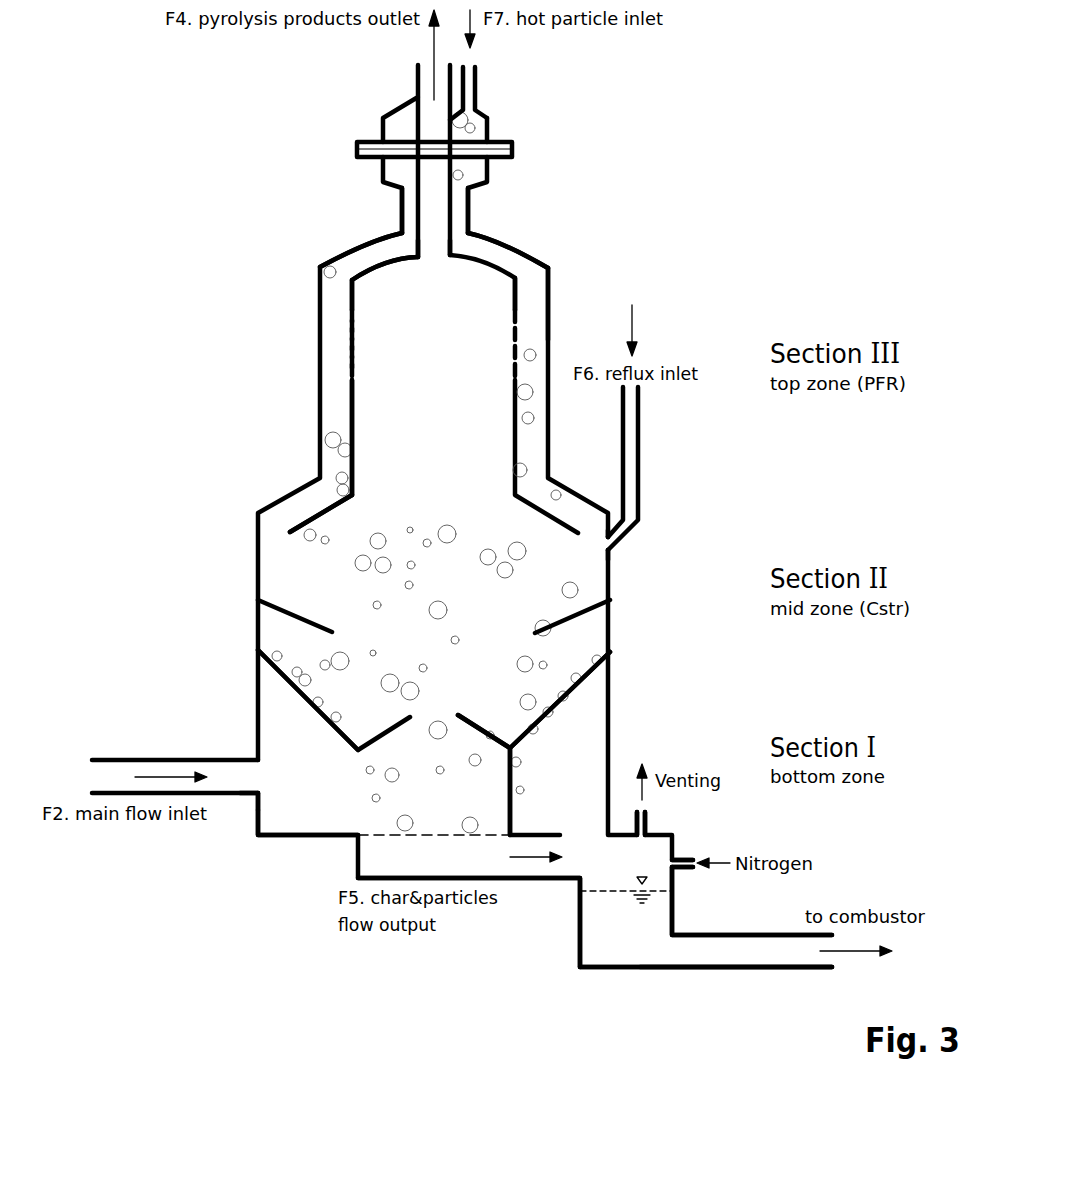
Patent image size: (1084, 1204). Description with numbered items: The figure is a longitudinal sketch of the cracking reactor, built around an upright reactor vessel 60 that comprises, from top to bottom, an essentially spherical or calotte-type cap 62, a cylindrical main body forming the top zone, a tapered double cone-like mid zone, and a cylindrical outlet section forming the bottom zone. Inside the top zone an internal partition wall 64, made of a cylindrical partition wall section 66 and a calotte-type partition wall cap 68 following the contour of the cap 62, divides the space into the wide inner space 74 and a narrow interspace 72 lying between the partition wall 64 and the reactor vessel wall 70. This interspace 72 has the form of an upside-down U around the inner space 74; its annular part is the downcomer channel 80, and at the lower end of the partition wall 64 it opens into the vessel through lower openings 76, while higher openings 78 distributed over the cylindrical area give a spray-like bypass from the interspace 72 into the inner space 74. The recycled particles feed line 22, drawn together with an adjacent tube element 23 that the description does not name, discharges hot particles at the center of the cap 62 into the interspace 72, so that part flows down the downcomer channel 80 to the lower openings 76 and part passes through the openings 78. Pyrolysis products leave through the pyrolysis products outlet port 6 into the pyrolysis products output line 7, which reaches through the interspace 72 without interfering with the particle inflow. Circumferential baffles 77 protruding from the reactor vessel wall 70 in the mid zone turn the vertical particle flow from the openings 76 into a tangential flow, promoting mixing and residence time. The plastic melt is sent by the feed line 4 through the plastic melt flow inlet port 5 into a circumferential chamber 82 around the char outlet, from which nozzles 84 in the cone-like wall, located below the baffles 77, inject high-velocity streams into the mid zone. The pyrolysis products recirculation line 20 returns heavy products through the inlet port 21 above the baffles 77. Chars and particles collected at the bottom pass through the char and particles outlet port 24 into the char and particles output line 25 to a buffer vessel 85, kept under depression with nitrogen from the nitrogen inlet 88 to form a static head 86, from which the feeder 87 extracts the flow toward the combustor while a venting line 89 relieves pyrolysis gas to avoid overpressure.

The feed line 4 is at (128, 760).
The plastic melt flow inlet port 5 is at (255, 795).
The pyrolysis products outlet port 6 is at (415, 250).
The pyrolysis products output line 7 is at (418, 77).
The pyrolysis products recirculation line 20 is at (640, 458).
The inlet port 21 is at (612, 555).
The recycled particles feed line 22 is at (478, 90).
The hot particle outer tube 23 is at (487, 117).
The char and particles outlet port 24 is at (513, 826).
The char and particles output line 25 is at (578, 882).
The reactor vessel 60 is at (300, 665).
The cap 62 is at (528, 270).
The partition wall 64 is at (350, 295).
The partition wall section 66 is at (350, 440).
The partition wall cap 68 is at (367, 266).
The reactor vessel wall 70 is at (330, 262).
The interspace 72 is at (462, 222).
The inner space 74 is at (497, 310).
The lower openings 76 is at (290, 525).
The circumferential baffles 77 is at (282, 604).
The openings 78 is at (352, 345).
The downcomer channel 80 is at (532, 315).
The chamber 82 is at (283, 818).
The nozzles 84 is at (617, 665).
The buffer vessel 85 is at (578, 950).
The static head 86 is at (655, 903).
The feeder 87 is at (722, 955).
The nitrogen inlet 88 is at (680, 860).
The venting line 89 is at (650, 822).